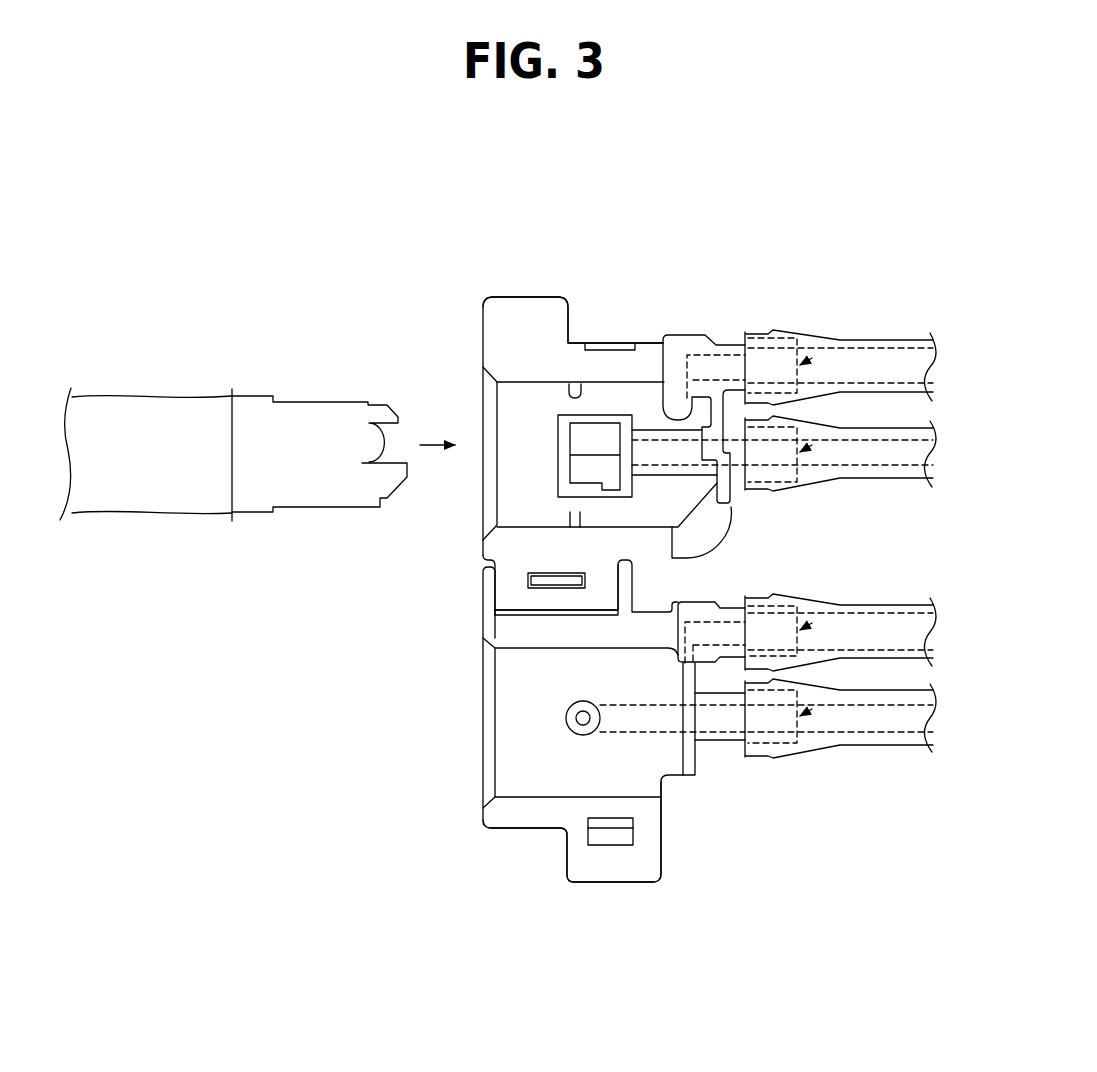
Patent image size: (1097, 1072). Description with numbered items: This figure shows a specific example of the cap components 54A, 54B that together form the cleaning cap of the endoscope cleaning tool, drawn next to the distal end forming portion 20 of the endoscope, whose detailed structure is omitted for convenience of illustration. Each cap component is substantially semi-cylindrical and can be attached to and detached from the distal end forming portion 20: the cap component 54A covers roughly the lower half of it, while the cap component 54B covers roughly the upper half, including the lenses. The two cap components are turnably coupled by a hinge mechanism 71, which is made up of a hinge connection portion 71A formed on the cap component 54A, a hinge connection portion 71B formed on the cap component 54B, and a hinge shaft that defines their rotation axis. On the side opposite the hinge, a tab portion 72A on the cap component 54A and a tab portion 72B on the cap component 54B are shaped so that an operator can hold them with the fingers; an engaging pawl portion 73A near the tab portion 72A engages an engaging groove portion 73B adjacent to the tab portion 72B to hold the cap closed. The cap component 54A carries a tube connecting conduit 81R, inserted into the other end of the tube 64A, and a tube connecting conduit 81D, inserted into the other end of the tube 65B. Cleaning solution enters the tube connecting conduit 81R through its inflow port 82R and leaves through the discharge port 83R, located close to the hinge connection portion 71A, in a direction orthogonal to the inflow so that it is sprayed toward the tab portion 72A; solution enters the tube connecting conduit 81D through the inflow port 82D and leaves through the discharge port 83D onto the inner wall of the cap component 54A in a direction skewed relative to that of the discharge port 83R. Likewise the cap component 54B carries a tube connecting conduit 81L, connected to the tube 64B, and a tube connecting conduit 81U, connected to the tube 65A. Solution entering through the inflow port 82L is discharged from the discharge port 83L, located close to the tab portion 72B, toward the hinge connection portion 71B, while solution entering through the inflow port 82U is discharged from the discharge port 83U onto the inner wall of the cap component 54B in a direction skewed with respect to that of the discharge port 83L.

The distal end forming portion 20 is at (318, 358).
The cap component 54A is at (531, 898).
The cap component 54B is at (595, 254).
The tube 64A is at (868, 604).
The tube 64B is at (865, 338).
The tube 65A is at (863, 480).
The tube 65B is at (863, 745).
The hinge mechanism 71 is at (375, 572).
The hinge connection portion 71A is at (487, 590).
The hinge connection portion 71B is at (482, 550).
The tab portion 72A is at (585, 860).
The tab portion 72B is at (508, 322).
The engaging pawl portion 73A is at (622, 838).
The engaging groove portion 73B is at (610, 343).
The tube connecting conduit 81D is at (750, 757).
The tube connecting conduit 81L is at (758, 332).
The tube connecting conduit 81R is at (755, 597).
The tube connecting conduit 81U is at (757, 492).
The inflow port 82D is at (818, 748).
The inflow port 82L is at (808, 358).
The inflow port 82R is at (812, 622).
The inflow port 82U is at (812, 460).
The discharge port 83D is at (570, 718).
The discharge port 83L is at (688, 405).
The discharge port 83R is at (688, 668).
The discharge port 83U is at (602, 410).